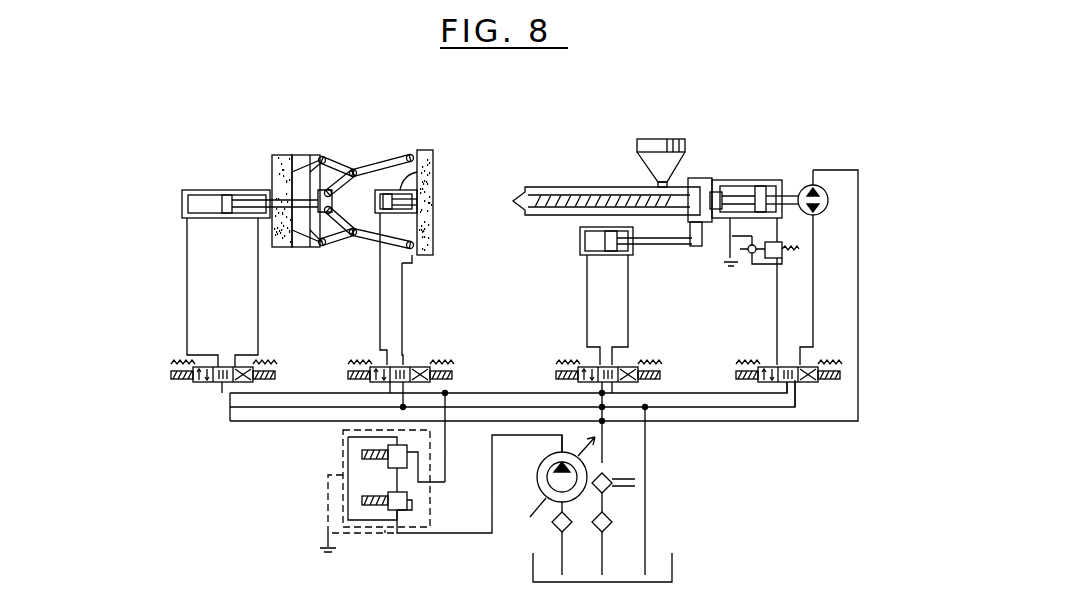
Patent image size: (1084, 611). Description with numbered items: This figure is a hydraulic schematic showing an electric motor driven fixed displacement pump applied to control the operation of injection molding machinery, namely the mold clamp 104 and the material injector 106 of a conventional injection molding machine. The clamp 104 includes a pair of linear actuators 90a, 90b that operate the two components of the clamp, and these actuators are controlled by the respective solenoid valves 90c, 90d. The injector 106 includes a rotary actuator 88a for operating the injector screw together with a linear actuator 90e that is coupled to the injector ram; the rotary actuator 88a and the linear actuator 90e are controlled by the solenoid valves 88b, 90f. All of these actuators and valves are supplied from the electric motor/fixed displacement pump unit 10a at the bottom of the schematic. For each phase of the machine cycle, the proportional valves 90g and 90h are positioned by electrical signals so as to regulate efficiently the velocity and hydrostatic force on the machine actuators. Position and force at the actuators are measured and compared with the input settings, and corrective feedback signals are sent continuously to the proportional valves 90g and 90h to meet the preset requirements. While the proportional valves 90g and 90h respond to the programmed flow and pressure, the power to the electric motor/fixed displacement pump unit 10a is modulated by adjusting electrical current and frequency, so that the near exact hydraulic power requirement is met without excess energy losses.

The mold clamp 104 is at (344, 143).
The linear actuator 90a is at (236, 191).
The linear actuator 90b is at (440, 169).
The solenoid valve 90c is at (206, 383).
The solenoid valve 90d is at (422, 365).
The linear actuator 90e is at (582, 240).
The solenoid valve 90f is at (627, 365).
The proportional valve 90g is at (325, 478).
The proportional valve 90h is at (391, 543).
The material injector 106 is at (705, 164).
The rotary actuator 88a is at (825, 188).
The solenoid valve 88b is at (823, 366).
The electric motor/fixed displacement pump unit 10a is at (537, 504).